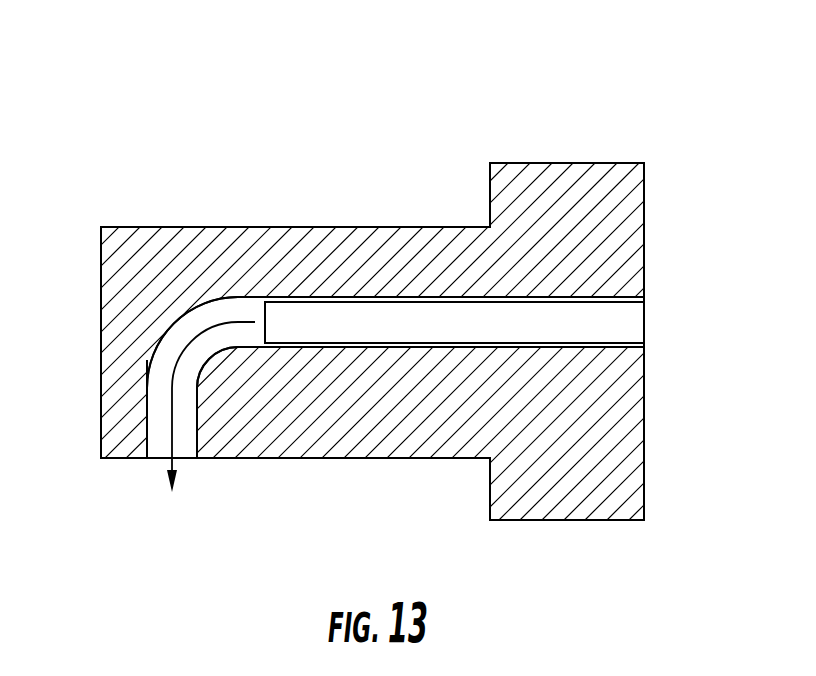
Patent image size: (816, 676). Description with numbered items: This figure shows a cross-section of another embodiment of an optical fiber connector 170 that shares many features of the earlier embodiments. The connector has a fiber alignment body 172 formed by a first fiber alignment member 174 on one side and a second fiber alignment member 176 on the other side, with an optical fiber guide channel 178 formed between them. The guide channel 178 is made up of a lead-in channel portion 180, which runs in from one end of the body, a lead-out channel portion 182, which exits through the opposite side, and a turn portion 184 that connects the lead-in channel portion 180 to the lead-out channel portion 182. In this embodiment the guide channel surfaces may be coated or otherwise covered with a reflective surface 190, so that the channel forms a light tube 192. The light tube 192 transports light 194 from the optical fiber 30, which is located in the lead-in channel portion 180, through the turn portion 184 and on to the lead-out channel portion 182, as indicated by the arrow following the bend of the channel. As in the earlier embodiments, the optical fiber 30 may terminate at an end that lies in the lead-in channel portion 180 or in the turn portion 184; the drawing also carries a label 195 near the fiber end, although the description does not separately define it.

The optical fiber connector 170 is at (700, 144).
The fiber alignment body 172 is at (217, 148).
The first fiber alignment member 174 is at (415, 242).
The second fiber alignment member 176 is at (405, 458).
The optical fiber guide channel 178 is at (541, 300).
The lead-in channel portion 180 is at (626, 268).
The lead-out channel portion 182 is at (106, 422).
The turn portion 184 is at (148, 299).
The reflective surface 190 is at (151, 358).
The light tube 192 is at (195, 355).
The light 194 is at (240, 320).
The tube end 195 is at (267, 330).
The optical fiber 30 is at (582, 314).